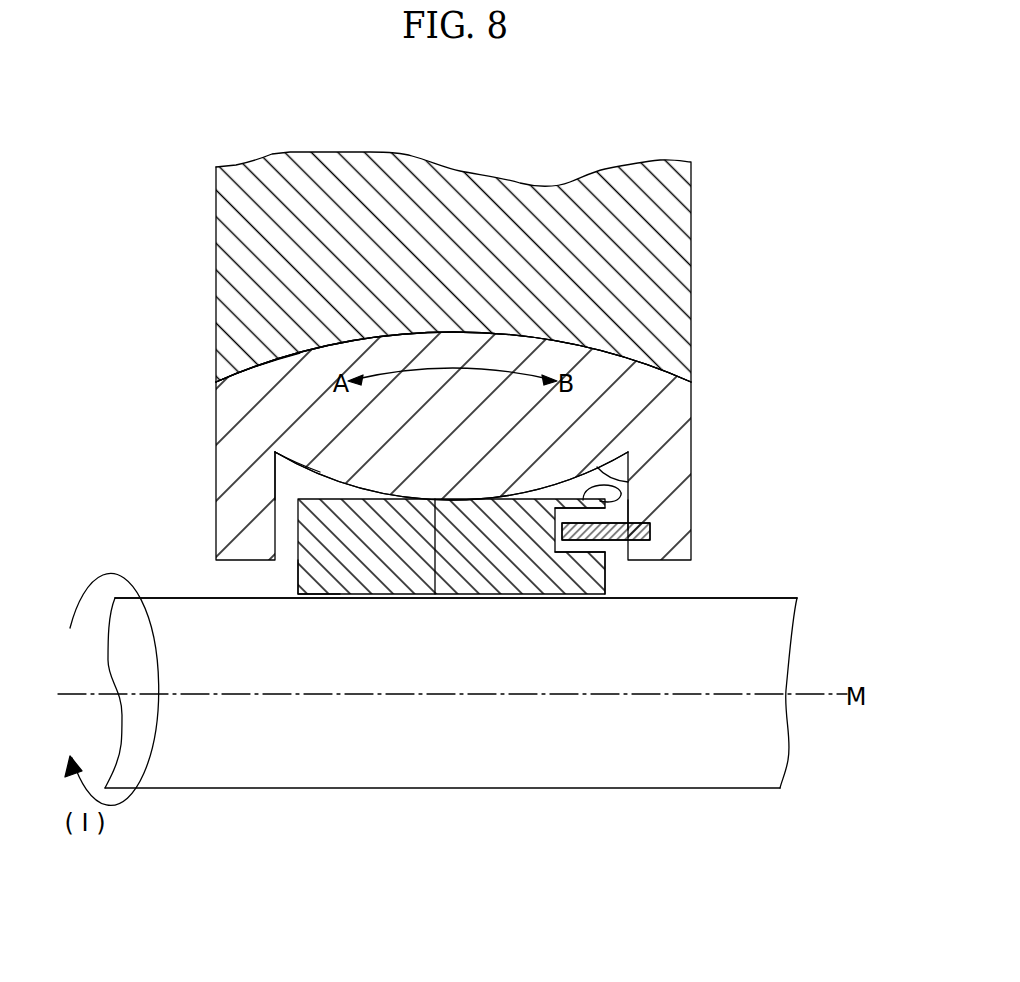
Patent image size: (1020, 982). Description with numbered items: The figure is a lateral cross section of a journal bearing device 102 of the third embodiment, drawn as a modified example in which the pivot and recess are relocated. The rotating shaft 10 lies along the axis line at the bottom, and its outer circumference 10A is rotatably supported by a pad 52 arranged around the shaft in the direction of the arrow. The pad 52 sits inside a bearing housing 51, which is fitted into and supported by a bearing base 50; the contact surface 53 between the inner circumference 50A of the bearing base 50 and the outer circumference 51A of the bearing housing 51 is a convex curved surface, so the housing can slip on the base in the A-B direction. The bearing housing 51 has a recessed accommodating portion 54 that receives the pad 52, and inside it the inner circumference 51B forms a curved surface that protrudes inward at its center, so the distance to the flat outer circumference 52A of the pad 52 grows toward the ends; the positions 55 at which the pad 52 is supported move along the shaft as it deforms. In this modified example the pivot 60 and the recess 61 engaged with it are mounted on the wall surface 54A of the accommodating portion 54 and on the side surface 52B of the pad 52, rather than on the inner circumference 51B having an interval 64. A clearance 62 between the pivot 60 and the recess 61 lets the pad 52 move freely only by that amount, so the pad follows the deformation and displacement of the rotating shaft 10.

The journal bearing device 102 is at (690, 128).
The bearing base 50 is at (680, 263).
The inner circumference of the bearing base 50A is at (666, 372).
The bearing housing 51 is at (222, 412).
The outer circumference of the bearing housing 51A is at (640, 358).
The inner circumference of the bearing housing 51B is at (628, 482).
The contact surface 53 is at (263, 352).
The accommodating portion 54 is at (300, 463).
The wall surface of the accommodating portion 54A is at (635, 505).
The interval 64 is at (288, 482).
The pad 52 is at (320, 577).
The outer circumference of the pad 52A is at (618, 488).
The side surface of the pad 52B is at (298, 572).
The positions at which the pads are supported 55 is at (435, 594).
The pivot 60 is at (650, 537).
The recess 61 is at (562, 540).
The clearance 62 is at (598, 547).
The rotating shaft 10 is at (758, 650).
The outer circumference of the rotating shaft 10A is at (735, 598).